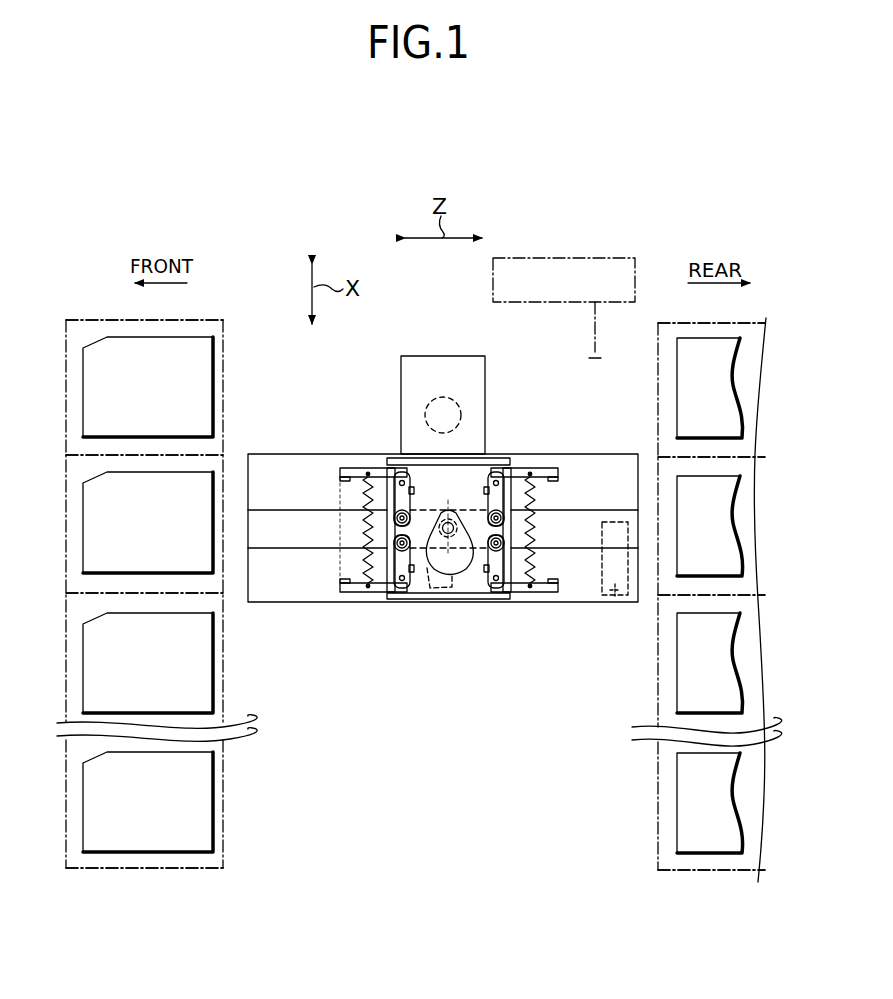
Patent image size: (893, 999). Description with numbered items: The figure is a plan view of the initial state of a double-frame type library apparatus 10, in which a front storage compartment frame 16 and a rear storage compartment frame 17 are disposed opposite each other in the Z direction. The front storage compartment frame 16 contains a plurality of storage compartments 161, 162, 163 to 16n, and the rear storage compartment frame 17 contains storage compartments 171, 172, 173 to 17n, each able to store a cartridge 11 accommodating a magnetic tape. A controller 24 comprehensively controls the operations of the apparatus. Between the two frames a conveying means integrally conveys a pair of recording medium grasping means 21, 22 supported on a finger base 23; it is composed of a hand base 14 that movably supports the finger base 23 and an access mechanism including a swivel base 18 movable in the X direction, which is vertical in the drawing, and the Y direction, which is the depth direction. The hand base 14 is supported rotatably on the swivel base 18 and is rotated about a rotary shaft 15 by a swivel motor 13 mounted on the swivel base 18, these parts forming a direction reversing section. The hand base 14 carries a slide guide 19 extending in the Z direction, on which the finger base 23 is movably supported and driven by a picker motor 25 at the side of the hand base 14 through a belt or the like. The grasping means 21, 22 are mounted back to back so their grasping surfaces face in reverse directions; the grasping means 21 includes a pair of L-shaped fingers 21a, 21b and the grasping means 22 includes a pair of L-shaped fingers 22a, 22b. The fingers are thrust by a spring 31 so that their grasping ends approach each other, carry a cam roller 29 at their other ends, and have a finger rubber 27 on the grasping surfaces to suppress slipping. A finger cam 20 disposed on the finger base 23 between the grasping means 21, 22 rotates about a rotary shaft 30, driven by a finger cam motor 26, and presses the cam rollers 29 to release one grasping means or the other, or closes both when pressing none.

The double-frame type library apparatus 10 is at (523, 216).
The cartridge 11 is at (205, 345).
The swivel motor 13 is at (455, 403).
The hand base 14 is at (330, 455).
The rotary shaft 15 is at (448, 511).
The front storage compartment frame 16 is at (196, 303).
The storage compartment 161 is at (88, 335).
The storage compartment 162 is at (85, 483).
The storage compartment 163 is at (87, 613).
The storage compartment 16n is at (85, 752).
The rear storage compartment frame 17 is at (682, 313).
The storage compartment 171 is at (743, 358).
The storage compartment 172 is at (753, 477).
The storage compartment 173 is at (750, 622).
The storage compartment 17n is at (750, 762).
The swivel base 18 is at (458, 355).
The slide guide 19 is at (620, 508).
The finger cam 20 is at (462, 572).
The recording medium grasping means 21 is at (302, 462).
The L-shaped finger 21a is at (358, 468).
The L-shaped finger 21b is at (357, 597).
The recording medium grasping means 22 is at (556, 494).
The L-shaped finger 22a is at (545, 468).
The L-shaped finger 22b is at (540, 596).
The finger base 23 is at (476, 458).
The controller 24 is at (577, 258).
The picker motor 25 is at (629, 585).
The finger cam motor 26 is at (437, 600).
The finger rubber 27 is at (340, 580).
The cam roller 29 is at (412, 548).
The rotary shaft 30 is at (452, 515).
The spring 31 is at (365, 531).